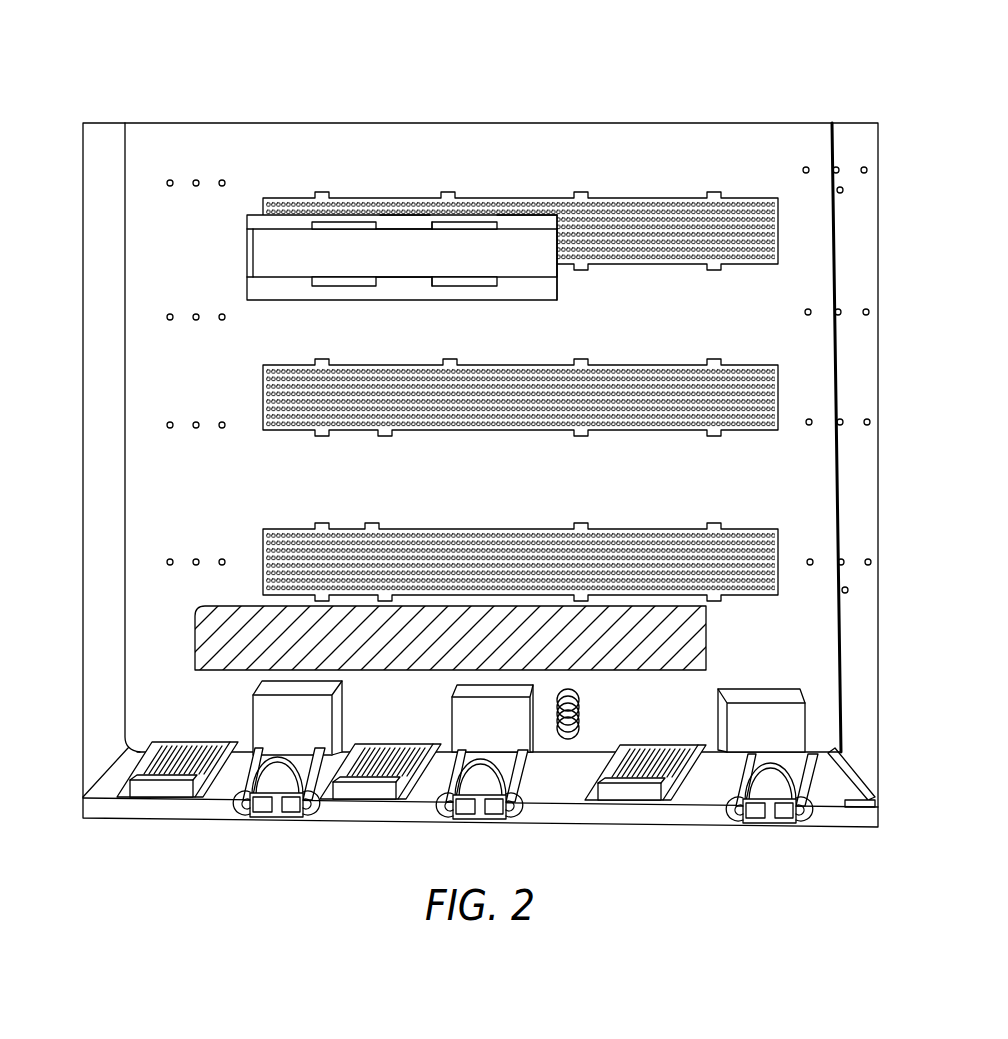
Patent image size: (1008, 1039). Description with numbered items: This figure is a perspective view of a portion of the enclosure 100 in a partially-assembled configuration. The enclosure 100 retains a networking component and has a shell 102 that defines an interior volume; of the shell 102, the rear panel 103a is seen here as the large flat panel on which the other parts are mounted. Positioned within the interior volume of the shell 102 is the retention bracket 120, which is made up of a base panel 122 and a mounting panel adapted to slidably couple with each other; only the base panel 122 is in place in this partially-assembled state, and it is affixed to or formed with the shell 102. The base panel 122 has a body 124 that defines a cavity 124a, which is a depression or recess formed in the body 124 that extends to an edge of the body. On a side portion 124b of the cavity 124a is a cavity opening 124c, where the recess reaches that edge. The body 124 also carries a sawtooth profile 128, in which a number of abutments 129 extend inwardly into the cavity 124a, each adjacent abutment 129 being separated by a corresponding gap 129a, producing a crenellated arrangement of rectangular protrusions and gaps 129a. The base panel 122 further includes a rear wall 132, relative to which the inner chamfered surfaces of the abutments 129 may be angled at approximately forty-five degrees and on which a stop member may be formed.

The enclosure 100 is at (128, 60).
The shell 102 is at (806, 138).
The rear panel 103a is at (201, 267).
The retention bracket 120 is at (333, 186).
The base panel 122 is at (403, 223).
The body 124 is at (503, 220).
The cavity 124a is at (560, 274).
The side portion 124b is at (551, 198).
The cavity opening 124c is at (565, 215).
The sawtooth profile 128 is at (424, 235).
The abutment 129 is at (281, 228).
The gap 129a is at (460, 231).
The rear wall 132 is at (305, 267).